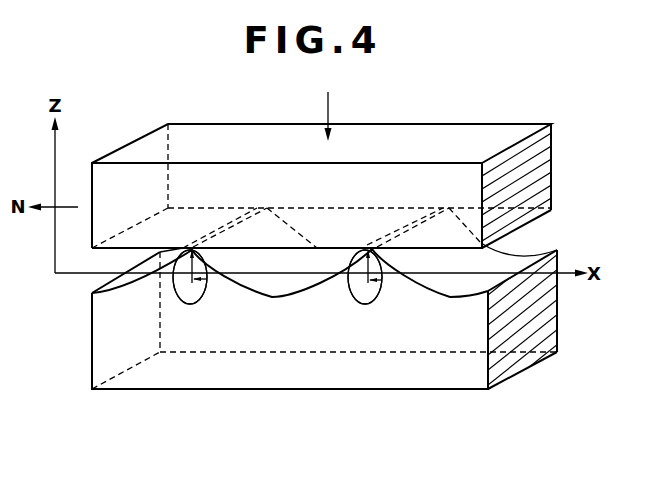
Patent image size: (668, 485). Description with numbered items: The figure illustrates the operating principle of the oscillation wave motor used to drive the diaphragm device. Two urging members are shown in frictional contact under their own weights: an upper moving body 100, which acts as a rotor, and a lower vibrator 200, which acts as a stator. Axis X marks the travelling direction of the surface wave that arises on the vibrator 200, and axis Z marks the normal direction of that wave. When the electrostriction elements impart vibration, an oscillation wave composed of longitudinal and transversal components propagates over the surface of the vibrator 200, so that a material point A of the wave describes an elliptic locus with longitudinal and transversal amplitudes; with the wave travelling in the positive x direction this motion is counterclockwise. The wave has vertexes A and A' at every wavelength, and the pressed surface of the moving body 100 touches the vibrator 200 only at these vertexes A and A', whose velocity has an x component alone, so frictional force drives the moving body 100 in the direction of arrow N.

The moving body 100 is at (437, 133).
The vibrator 200 is at (288, 382).
The material point A is at (183, 261).
The vertex A' is at (351, 261).